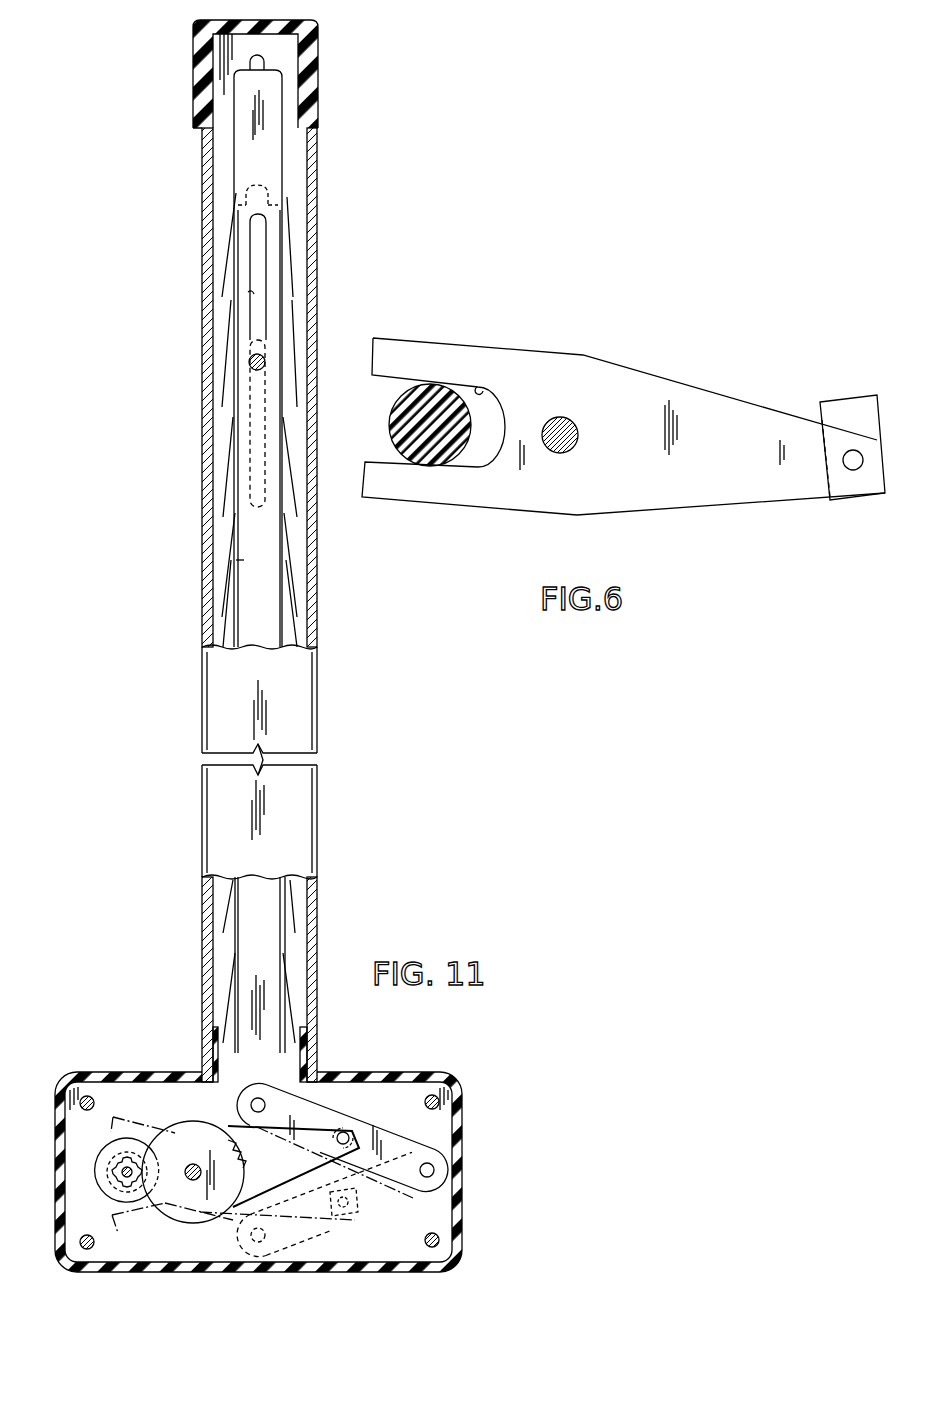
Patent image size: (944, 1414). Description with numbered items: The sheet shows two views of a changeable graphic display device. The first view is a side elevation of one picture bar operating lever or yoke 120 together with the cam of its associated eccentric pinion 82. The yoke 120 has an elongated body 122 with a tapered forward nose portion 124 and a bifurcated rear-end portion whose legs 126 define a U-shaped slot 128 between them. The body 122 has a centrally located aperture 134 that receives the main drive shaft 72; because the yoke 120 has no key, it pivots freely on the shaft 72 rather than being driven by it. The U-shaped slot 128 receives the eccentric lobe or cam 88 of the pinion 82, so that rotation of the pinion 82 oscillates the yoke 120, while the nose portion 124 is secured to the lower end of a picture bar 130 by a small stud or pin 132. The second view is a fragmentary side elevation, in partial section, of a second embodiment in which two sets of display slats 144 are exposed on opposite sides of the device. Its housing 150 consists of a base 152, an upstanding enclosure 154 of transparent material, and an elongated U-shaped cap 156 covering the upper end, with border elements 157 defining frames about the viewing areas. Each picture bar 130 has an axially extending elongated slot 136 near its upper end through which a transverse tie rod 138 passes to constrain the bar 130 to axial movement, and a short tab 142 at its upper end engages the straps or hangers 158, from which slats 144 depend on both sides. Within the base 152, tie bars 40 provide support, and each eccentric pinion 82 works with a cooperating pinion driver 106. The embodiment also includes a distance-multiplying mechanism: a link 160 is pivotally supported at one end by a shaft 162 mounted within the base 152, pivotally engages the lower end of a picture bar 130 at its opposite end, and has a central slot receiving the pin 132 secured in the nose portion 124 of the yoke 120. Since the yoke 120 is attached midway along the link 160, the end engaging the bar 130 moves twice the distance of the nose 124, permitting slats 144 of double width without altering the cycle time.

In FIG. 11, the tie bars 40 is at (91, 1097).
In FIG. 11, the main drive shaft 72 is at (194, 1164).
In FIG. 6, the main drive shaft 72 is at (561, 454).
In FIG. 11, the eccentric pinion 82 is at (92, 1190).
In FIG. 11, the eccentric lobe or cam 88 is at (118, 1200).
In FIG. 6, the eccentric lobe or cam 88 is at (390, 429).
In FIG. 11, the pinion driver 106 is at (187, 1230).
In FIG. 11, the picture bar operating lever or yoke 120 is at (232, 1118).
In FIG. 6, the picture bar operating lever or yoke 120 is at (633, 522).
In FIG. 6, the elongated body 122 is at (630, 398).
In FIG. 6, the tapered forward nose portion 124 is at (740, 506).
In FIG. 6, the legs 126 is at (453, 349).
In FIG. 6, the U-shaped slot 128 is at (487, 393).
In FIG. 11, the picture bar 130 is at (245, 560).
In FIG. 6, the picture bar 130 is at (845, 401).
In FIG. 11, the stud or pin 132 is at (349, 1135).
In FIG. 6, the stud or pin 132 is at (852, 470).
In FIG. 6, the centrally located aperture 134 is at (578, 435).
In FIG. 11, the axially extending elongated slot 136 is at (250, 296).
In FIG. 11, the tie rod 138 is at (253, 364).
In FIG. 11, the tab 142 is at (266, 62).
In FIG. 11, the display slats 144 is at (293, 293).
In FIG. 11, the housing 150 is at (200, 713).
In FIG. 11, the base 152 is at (372, 1072).
In FIG. 11, the upstanding enclosure 154 is at (317, 586).
In FIG. 11, the U-shaped cap 156 is at (318, 107).
In FIG. 11, the border elements 157 is at (309, 231).
In FIG. 11, the straps or hangers 158 is at (283, 182).
In FIG. 11, the link 160 is at (396, 1144).
In FIG. 11, the shaft 162 is at (251, 1105).